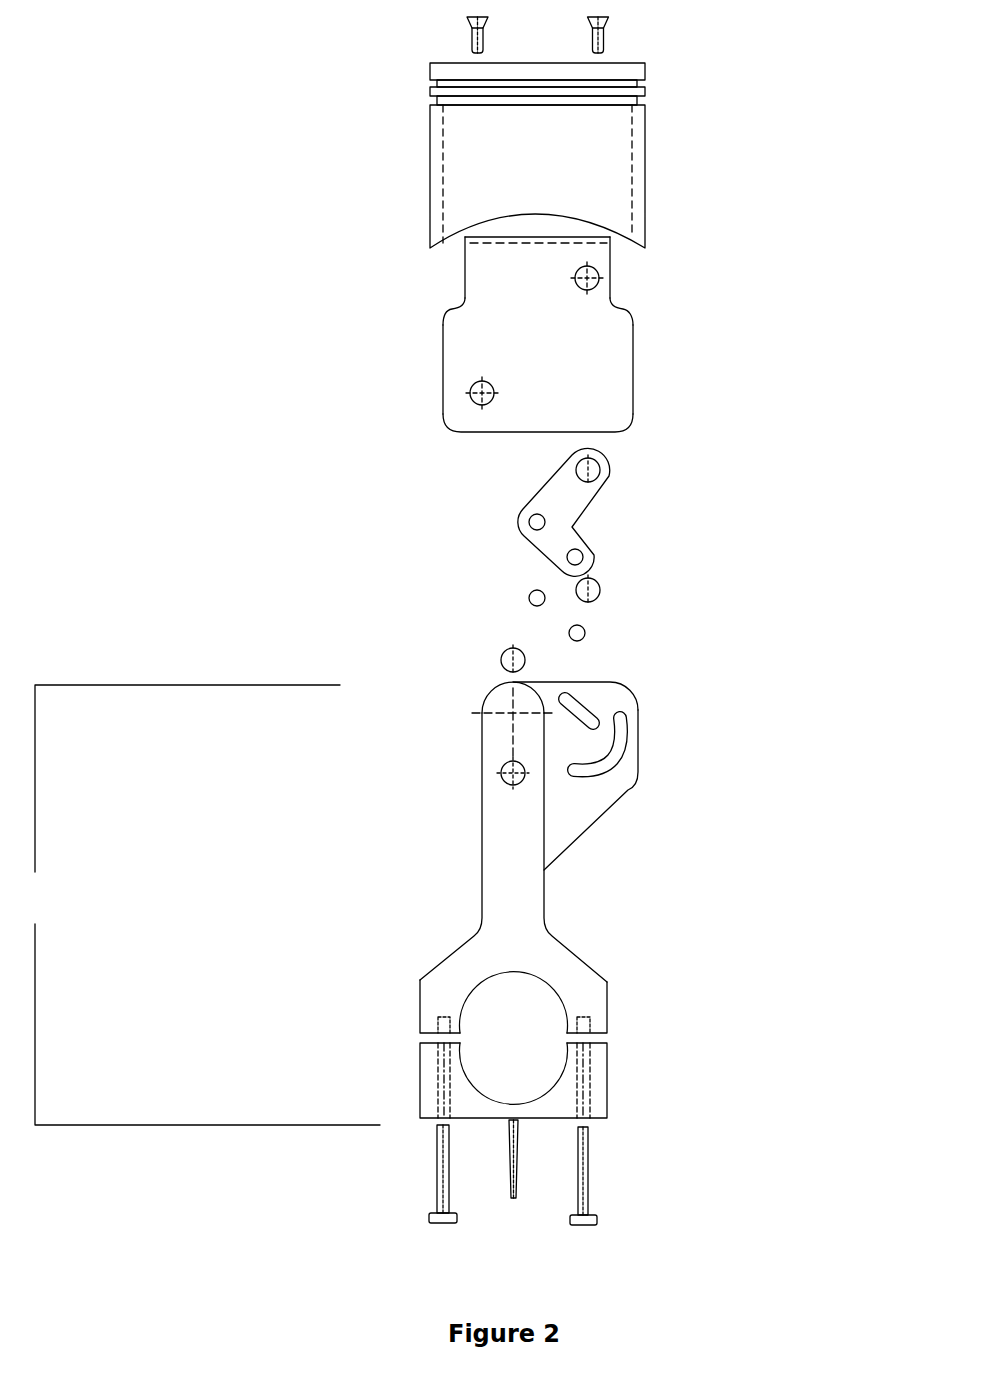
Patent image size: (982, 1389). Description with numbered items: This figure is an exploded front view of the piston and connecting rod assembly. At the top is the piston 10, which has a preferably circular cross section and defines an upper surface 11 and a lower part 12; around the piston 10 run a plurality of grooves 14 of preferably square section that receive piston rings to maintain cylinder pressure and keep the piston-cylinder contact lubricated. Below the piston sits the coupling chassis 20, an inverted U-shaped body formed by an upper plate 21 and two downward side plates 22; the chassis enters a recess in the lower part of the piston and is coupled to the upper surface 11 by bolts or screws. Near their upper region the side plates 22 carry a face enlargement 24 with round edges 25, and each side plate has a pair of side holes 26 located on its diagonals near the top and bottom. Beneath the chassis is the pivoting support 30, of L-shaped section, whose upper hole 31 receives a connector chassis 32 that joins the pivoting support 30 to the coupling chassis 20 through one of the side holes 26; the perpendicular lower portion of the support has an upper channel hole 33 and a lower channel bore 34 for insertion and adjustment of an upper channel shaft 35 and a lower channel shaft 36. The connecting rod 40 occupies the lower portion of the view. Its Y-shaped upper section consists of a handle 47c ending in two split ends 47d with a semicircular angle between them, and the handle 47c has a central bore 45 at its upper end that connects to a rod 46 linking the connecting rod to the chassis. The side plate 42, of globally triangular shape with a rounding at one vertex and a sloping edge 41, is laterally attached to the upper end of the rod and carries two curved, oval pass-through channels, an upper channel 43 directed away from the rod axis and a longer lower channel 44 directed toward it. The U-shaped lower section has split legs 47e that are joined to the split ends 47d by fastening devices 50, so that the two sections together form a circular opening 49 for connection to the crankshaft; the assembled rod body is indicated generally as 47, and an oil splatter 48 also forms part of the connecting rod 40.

The piston 10 is at (430, 172).
The upper surface 11 is at (645, 68).
The lower part 12 is at (607, 178).
The grooves 14 is at (430, 89).
The coupling chassis 20 is at (430, 360).
The upper plate 21 is at (467, 244).
The side plates 22 is at (483, 273).
The face enlargement 24 is at (442, 367).
The round edges 25 is at (452, 308).
The side holes 26 is at (598, 280).
The pivoting support 30 is at (547, 493).
The upper hole 31 is at (592, 478).
The connector chassis 32 is at (590, 602).
The upper channel hole 33 is at (535, 523).
The lower channel bore 34 is at (582, 553).
The upper channel shaft 35 is at (530, 593).
The lower channel shaft 36 is at (568, 632).
The connecting rod 40 is at (337, 915).
The lobe 41 is at (570, 833).
The side plate 42 is at (627, 695).
The upper channel 43 is at (573, 702).
The lower channel 44 is at (613, 740).
The central bore 45 is at (500, 775).
The rod 46 is at (500, 663).
The clamp 47 is at (207, 905).
The handle 47c is at (522, 890).
The split ends 47d is at (608, 986).
The split legs 47e is at (607, 1077).
The oil splatter 48 is at (514, 1200).
The opening 49 is at (507, 1058).
The fastening devices 50 is at (595, 1190).